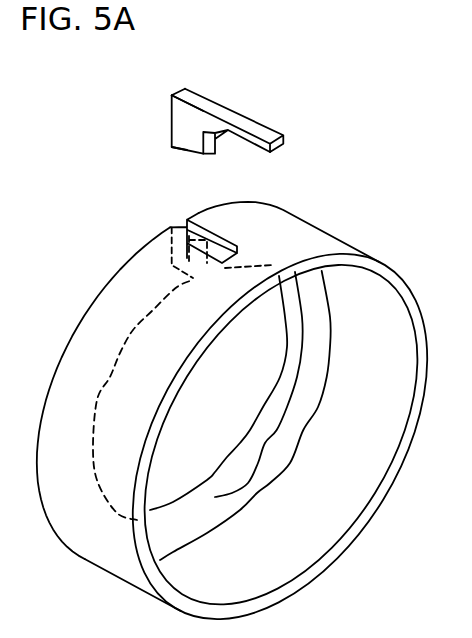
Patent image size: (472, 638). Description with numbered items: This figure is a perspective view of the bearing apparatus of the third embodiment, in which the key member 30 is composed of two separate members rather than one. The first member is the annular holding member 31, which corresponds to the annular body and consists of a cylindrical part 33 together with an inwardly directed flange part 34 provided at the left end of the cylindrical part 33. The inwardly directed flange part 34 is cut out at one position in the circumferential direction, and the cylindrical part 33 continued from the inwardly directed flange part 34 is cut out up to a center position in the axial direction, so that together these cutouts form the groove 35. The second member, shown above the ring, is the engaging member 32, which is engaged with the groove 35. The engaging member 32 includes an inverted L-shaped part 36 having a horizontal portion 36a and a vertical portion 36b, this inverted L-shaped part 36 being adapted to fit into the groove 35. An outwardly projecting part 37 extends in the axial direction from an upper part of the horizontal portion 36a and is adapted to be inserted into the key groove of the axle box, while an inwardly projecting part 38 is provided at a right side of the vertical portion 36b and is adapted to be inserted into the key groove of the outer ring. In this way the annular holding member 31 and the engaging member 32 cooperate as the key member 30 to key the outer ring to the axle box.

The key member 30 is at (254, 402).
The annular holding member 31 is at (471, 316).
The engaging member 32 is at (227, 125).
The cylindrical part 33 is at (332, 522).
The inwardly directed flange part 34 is at (208, 510).
The groove 35 is at (199, 213).
The inverted L-shaped part 36 is at (189, 125).
The horizontal portion 36a is at (197, 115).
The vertical portion 36b is at (180, 150).
The outwardly projecting part 37 is at (237, 110).
The inwardly projecting part 38 is at (203, 154).